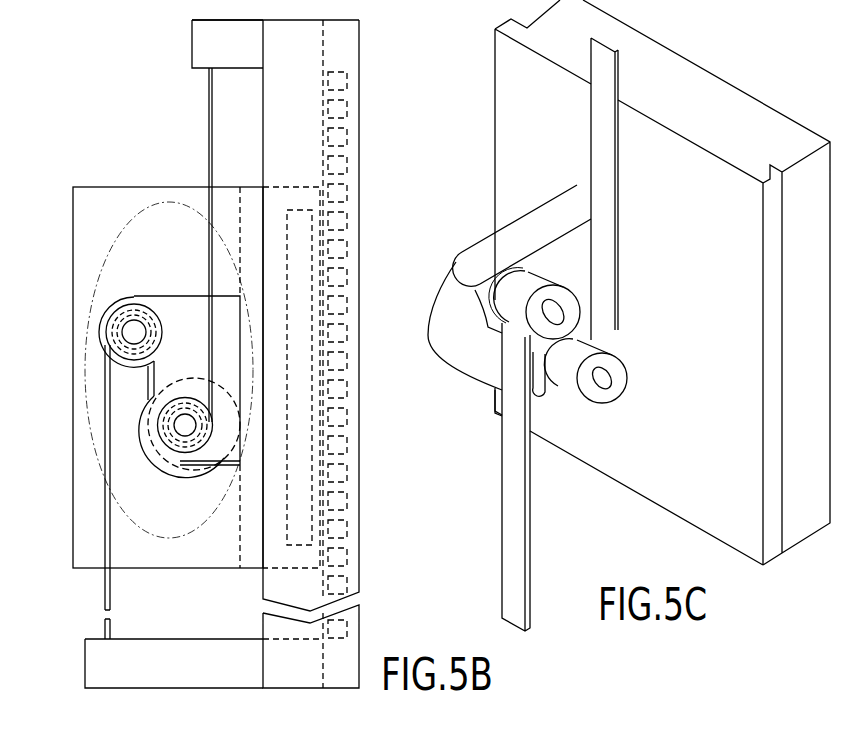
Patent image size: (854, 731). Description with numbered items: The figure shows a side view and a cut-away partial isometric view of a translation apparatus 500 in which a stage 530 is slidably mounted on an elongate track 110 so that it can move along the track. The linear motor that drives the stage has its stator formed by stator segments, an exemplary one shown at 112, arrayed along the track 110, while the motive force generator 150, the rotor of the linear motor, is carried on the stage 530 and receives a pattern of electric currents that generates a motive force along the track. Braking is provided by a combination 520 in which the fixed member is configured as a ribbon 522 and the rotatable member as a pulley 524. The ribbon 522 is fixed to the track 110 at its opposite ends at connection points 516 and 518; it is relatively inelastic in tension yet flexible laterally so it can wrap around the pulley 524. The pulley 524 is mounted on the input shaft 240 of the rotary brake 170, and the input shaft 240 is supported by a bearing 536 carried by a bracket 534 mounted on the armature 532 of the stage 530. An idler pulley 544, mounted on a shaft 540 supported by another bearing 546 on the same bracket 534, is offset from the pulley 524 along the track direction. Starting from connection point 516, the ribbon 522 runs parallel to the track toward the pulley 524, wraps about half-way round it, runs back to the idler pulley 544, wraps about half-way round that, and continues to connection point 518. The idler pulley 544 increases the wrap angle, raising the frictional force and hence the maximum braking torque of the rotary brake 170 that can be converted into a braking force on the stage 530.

In FIG. 5B, the translation apparatus 500 is at (375, 48).
In FIG. 5B, the track 110 is at (353, 153).
In FIG. 5B, the stator segment 112 is at (347, 78).
In FIG. 5B, the motive force generator 150 is at (300, 210).
In FIG. 5B, the connection point 516 is at (192, 44).
In FIG. 5B, the connection point 518 is at (85, 663).
In FIG. 5C, the combination 520 is at (637, 281).
In FIG. 5B, the ribbon 522 is at (106, 618).
In FIG. 5C, the ribbon 522 is at (515, 418).
In FIG. 5B, the pulley 524 is at (198, 455).
In FIG. 5C, the pulley 524 is at (612, 395).
In FIG. 5B, the stage 530 is at (95, 185).
In FIG. 5B, the armature 532 is at (240, 192).
In FIG. 5C, the armature 532 is at (515, 103).
In FIG. 5B, the bracket 534 is at (178, 296).
In FIG. 5B, the bearing 536 is at (150, 440).
In FIG. 5C, the bearing 536 is at (545, 385).
In FIG. 5B, the shaft 540 is at (150, 322).
In FIG. 5C, the shaft 540 is at (548, 303).
In FIG. 5B, the idler pulley 544 is at (128, 306).
In FIG. 5C, the idler pulley 544 is at (545, 270).
In FIG. 5B, the bearing 546 is at (109, 306).
In FIG. 5C, the bearing 546 is at (497, 275).
In FIG. 5B, the input shaft 240 is at (185, 402).
In FIG. 5C, the input shaft 240 is at (610, 373).
In FIG. 5B, the rotary brake 170 is at (180, 460).
In FIG. 5C, the rotary brake 170 is at (455, 350).